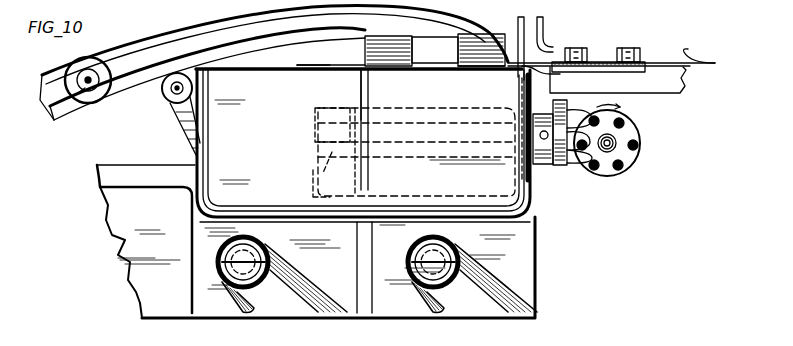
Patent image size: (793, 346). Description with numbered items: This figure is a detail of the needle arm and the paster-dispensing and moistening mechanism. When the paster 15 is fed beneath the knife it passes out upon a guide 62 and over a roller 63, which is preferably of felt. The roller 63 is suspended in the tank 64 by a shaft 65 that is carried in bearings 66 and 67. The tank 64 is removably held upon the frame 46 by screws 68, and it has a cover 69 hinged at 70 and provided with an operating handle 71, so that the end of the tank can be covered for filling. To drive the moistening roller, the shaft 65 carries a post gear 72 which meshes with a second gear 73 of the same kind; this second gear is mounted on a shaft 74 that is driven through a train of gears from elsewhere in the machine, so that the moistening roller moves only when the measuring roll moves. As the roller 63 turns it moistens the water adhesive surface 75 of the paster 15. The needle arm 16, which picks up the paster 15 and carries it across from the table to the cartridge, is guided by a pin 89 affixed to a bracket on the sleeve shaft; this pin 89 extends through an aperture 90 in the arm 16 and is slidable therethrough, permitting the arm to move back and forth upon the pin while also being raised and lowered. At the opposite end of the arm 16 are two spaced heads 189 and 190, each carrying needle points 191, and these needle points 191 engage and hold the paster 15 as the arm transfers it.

The paster 15 is at (713, 44).
The needle arm 16 is at (115, 97).
The frame 46 is at (138, 240).
The guide 62 is at (592, 62).
The roller 63 is at (366, 68).
The tank 64 is at (196, 160).
The shaft 65 is at (315, 133).
The bearing 66 is at (317, 170).
The bearing 67 is at (533, 187).
The screws 68 is at (450, 288).
The cover 69 is at (330, 69).
The hinge 70 is at (175, 107).
The operating handle 71 is at (162, 92).
The post gear 72 is at (568, 170).
The second gear 73 is at (613, 177).
The shaft 74 is at (632, 150).
The water adhesive surface 75 is at (690, 70).
The pin 89 is at (77, 110).
The aperture 90 is at (90, 60).
The head 189 is at (372, 78).
The head 190 is at (505, 52).
The needle points 191 is at (477, 72).